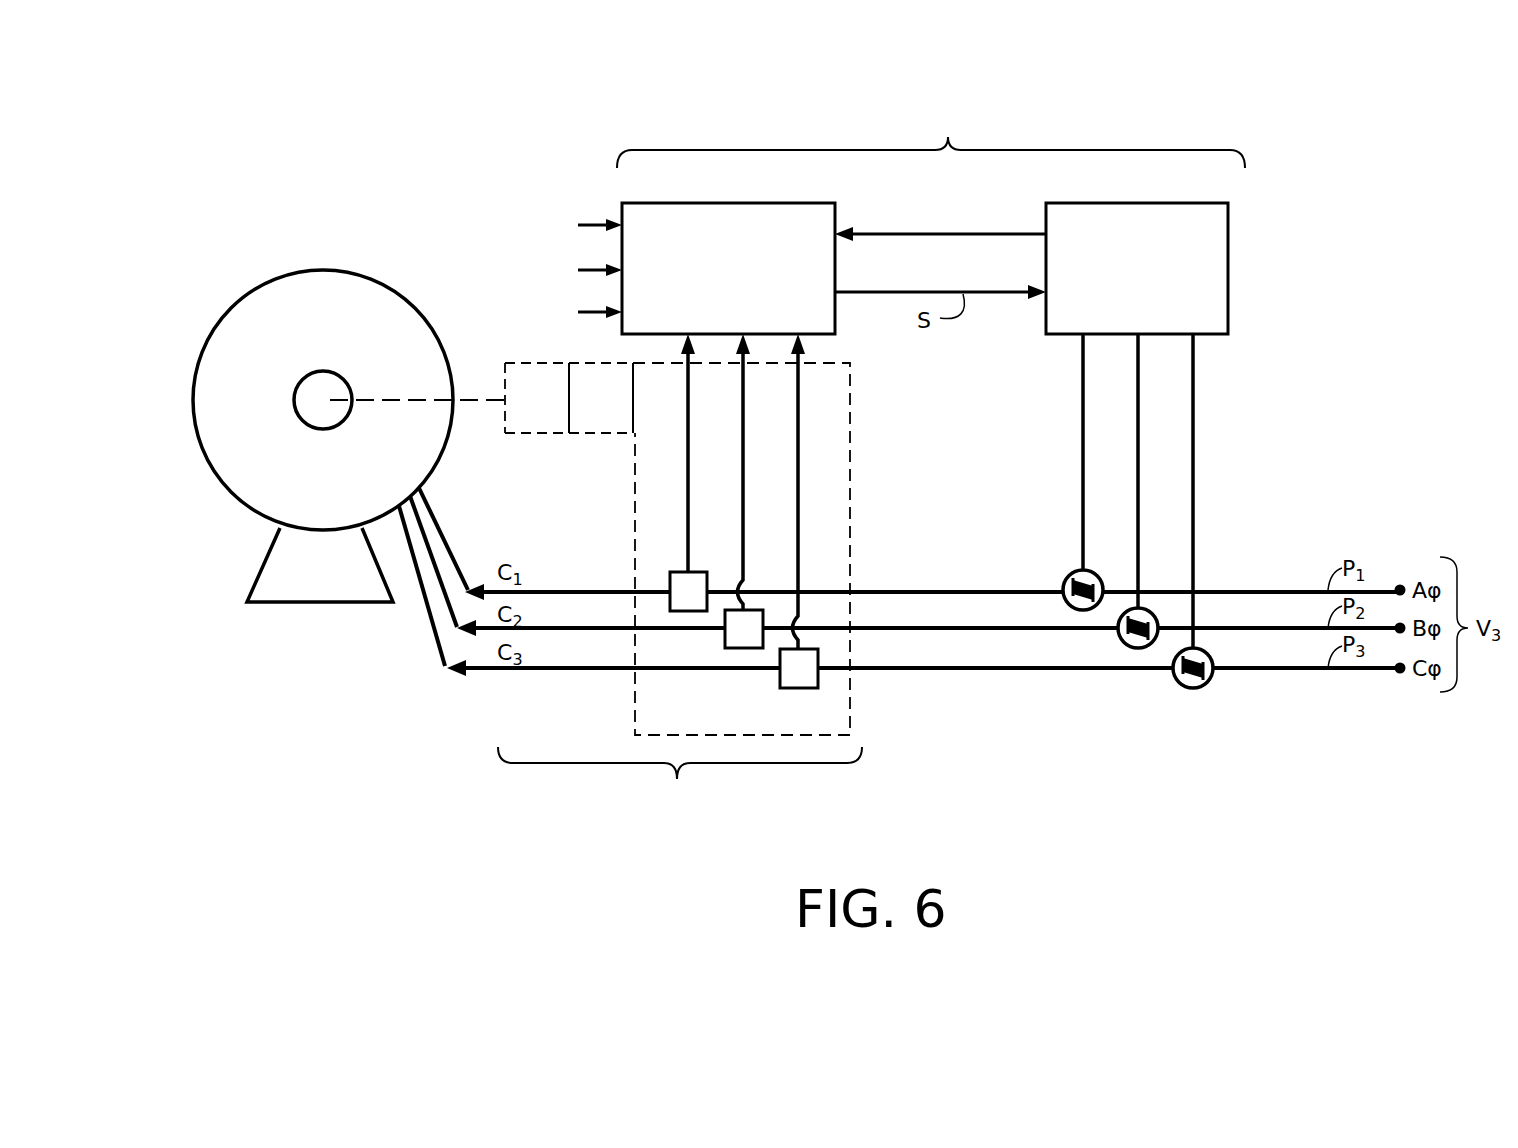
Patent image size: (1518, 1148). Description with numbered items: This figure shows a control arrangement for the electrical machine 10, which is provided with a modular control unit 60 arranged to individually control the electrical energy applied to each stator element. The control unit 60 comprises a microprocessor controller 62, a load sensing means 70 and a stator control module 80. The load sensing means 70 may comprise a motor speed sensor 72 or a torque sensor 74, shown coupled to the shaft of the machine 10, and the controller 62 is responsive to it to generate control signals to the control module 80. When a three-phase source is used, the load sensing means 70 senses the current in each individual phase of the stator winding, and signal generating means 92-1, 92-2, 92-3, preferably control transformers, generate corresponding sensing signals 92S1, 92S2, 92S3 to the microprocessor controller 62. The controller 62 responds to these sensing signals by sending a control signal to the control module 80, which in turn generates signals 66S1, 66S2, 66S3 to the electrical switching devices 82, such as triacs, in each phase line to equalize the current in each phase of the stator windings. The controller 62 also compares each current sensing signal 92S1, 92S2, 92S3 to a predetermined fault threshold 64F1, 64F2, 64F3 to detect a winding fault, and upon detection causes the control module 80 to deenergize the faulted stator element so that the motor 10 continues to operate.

The electrical machine 10 is at (270, 286).
The modular control unit 60 is at (931, 137).
The microprocessor controller 62 is at (728, 268).
The predetermined fault threshold 64F1 is at (569, 225).
The predetermined fault threshold 64F2 is at (569, 270).
The predetermined fault threshold 64F3 is at (569, 312).
The switching device signal 66S1 is at (1083, 523).
The switching device signal 66S2 is at (1140, 497).
The switching device signal 66S3 is at (1194, 533).
The load sensing means 70 is at (680, 588).
The motor speed sensor 72 is at (558, 410).
The torque sensor 74 is at (611, 410).
The stator control module 80 is at (1137, 268).
The electrical switching device 82 is at (1199, 687).
The signal generating means 92-1 is at (670, 574).
The signal generating means 92-2 is at (748, 650).
The signal generating means 92-3 is at (805, 690).
The sensing signal 92S1 is at (688, 487).
The sensing signal 92S2 is at (743, 468).
The sensing signal 92S3 is at (798, 517).